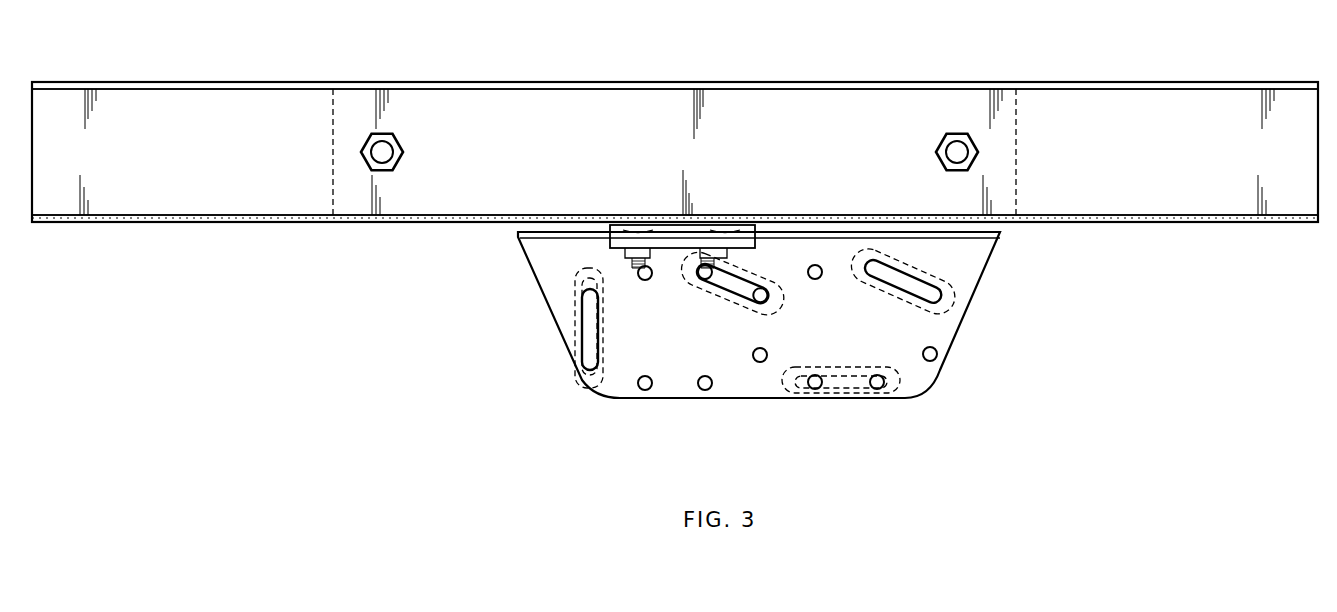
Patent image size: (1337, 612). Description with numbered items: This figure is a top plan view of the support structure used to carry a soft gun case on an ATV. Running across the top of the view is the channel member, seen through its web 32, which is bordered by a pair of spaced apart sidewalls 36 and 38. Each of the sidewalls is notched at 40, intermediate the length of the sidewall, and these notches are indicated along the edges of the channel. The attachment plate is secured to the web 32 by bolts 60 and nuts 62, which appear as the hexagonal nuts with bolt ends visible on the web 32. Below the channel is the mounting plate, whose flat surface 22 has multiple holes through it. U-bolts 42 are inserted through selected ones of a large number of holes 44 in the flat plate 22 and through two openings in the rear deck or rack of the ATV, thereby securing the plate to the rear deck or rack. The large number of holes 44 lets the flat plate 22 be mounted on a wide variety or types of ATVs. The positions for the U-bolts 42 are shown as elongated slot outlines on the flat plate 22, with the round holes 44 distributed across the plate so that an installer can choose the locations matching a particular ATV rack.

The flat surface 22 is at (693, 343).
The web 32 is at (626, 163).
The sidewall 36 is at (1168, 82).
The sidewall 38 is at (255, 222).
The notch 40 is at (509, 82).
The U-bolts 42 is at (585, 323).
The holes 44 is at (705, 390).
The bolts 60 is at (383, 150).
The nuts 62 is at (362, 147).